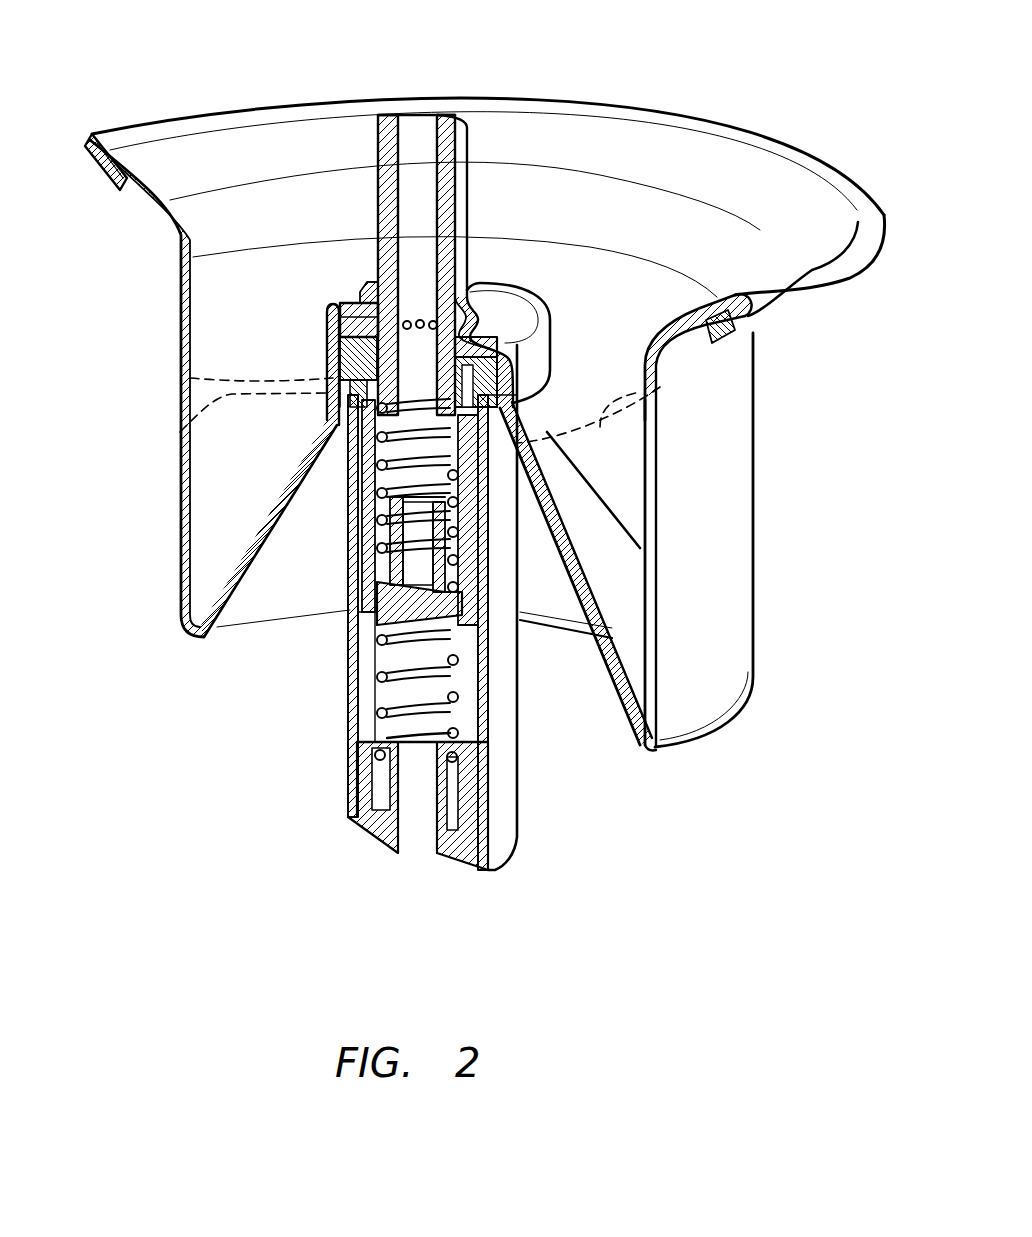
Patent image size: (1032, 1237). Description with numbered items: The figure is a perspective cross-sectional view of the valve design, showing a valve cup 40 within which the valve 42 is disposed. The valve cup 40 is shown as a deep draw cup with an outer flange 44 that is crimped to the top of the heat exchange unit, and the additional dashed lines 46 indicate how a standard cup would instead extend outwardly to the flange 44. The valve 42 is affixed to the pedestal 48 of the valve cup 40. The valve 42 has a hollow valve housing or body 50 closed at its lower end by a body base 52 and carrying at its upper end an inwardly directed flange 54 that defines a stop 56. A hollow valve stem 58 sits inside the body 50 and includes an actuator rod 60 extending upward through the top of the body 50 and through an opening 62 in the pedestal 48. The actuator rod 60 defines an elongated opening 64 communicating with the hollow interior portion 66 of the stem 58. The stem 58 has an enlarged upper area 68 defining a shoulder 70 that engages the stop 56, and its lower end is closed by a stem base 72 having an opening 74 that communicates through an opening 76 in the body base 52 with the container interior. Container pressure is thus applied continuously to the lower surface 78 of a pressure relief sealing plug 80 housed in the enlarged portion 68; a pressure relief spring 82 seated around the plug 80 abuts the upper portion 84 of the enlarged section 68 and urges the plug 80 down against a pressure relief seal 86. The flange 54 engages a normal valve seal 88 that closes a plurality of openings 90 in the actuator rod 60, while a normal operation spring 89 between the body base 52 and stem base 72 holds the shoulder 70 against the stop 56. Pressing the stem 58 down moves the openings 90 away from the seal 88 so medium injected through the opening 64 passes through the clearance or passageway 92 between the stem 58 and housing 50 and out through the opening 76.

The valve cup 40 is at (180, 281).
The valve 42 is at (275, 810).
The flange 44 is at (813, 205).
The dashed lines 46 is at (180, 432).
The pedestal 48 is at (507, 305).
The valve housing or body 50 is at (505, 706).
The body base 52 is at (373, 830).
The inwardly directed flange 54 is at (350, 367).
The stop 56 is at (482, 285).
The hollow valve stem 58 is at (395, 458).
The actuator rod 60 is at (470, 143).
The opening 62 is at (372, 272).
The elongated opening 64 is at (418, 125).
The hollow interior portion 66 is at (368, 420).
The enlarged upper area 68 is at (647, 380).
The shoulder 70 is at (357, 350).
The stem base 72 is at (440, 720).
The opening 74 is at (428, 627).
The opening 76 is at (420, 843).
The lower surface 78 is at (362, 745).
The pressure relief sealing plug 80 is at (355, 606).
The pressure relief spring 82 is at (380, 478).
The upper portion 84 is at (458, 445).
The pressure relief seal 86 is at (358, 622).
The normal valve seal 88 is at (330, 305).
The normal operation spring 89 is at (437, 747).
The openings 90 is at (405, 325).
The clearance or passageway 92 is at (417, 550).